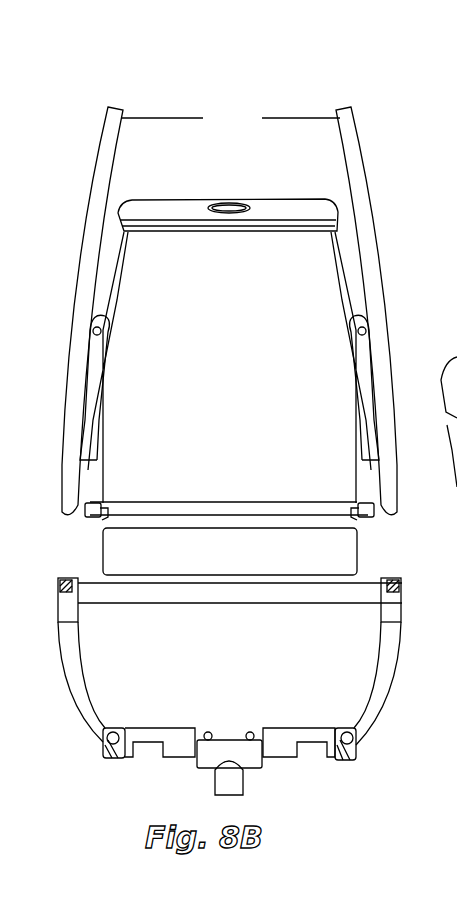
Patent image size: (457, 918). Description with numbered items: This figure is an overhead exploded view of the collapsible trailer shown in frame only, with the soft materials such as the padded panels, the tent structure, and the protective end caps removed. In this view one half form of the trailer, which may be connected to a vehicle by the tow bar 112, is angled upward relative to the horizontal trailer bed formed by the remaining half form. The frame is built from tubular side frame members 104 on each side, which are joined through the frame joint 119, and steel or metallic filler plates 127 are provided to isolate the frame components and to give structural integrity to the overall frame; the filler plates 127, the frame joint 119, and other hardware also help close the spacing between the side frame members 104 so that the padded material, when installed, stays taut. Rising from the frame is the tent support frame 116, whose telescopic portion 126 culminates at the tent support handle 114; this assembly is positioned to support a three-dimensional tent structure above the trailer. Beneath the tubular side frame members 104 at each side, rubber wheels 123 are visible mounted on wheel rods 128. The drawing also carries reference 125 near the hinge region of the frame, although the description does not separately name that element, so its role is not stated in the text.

The side frame members 104 is at (378, 240).
The tow bar 112 is at (245, 780).
The tent support handle 114 is at (237, 200).
The tent support frame 116 is at (358, 433).
The frame joint 119 is at (173, 523).
The rubber wheels 123 is at (368, 318).
The left hinge 125 is at (90, 318).
The telescopic portion 126 is at (117, 263).
The filler plates 127 is at (270, 118).
The wheel rods 128 is at (103, 433).